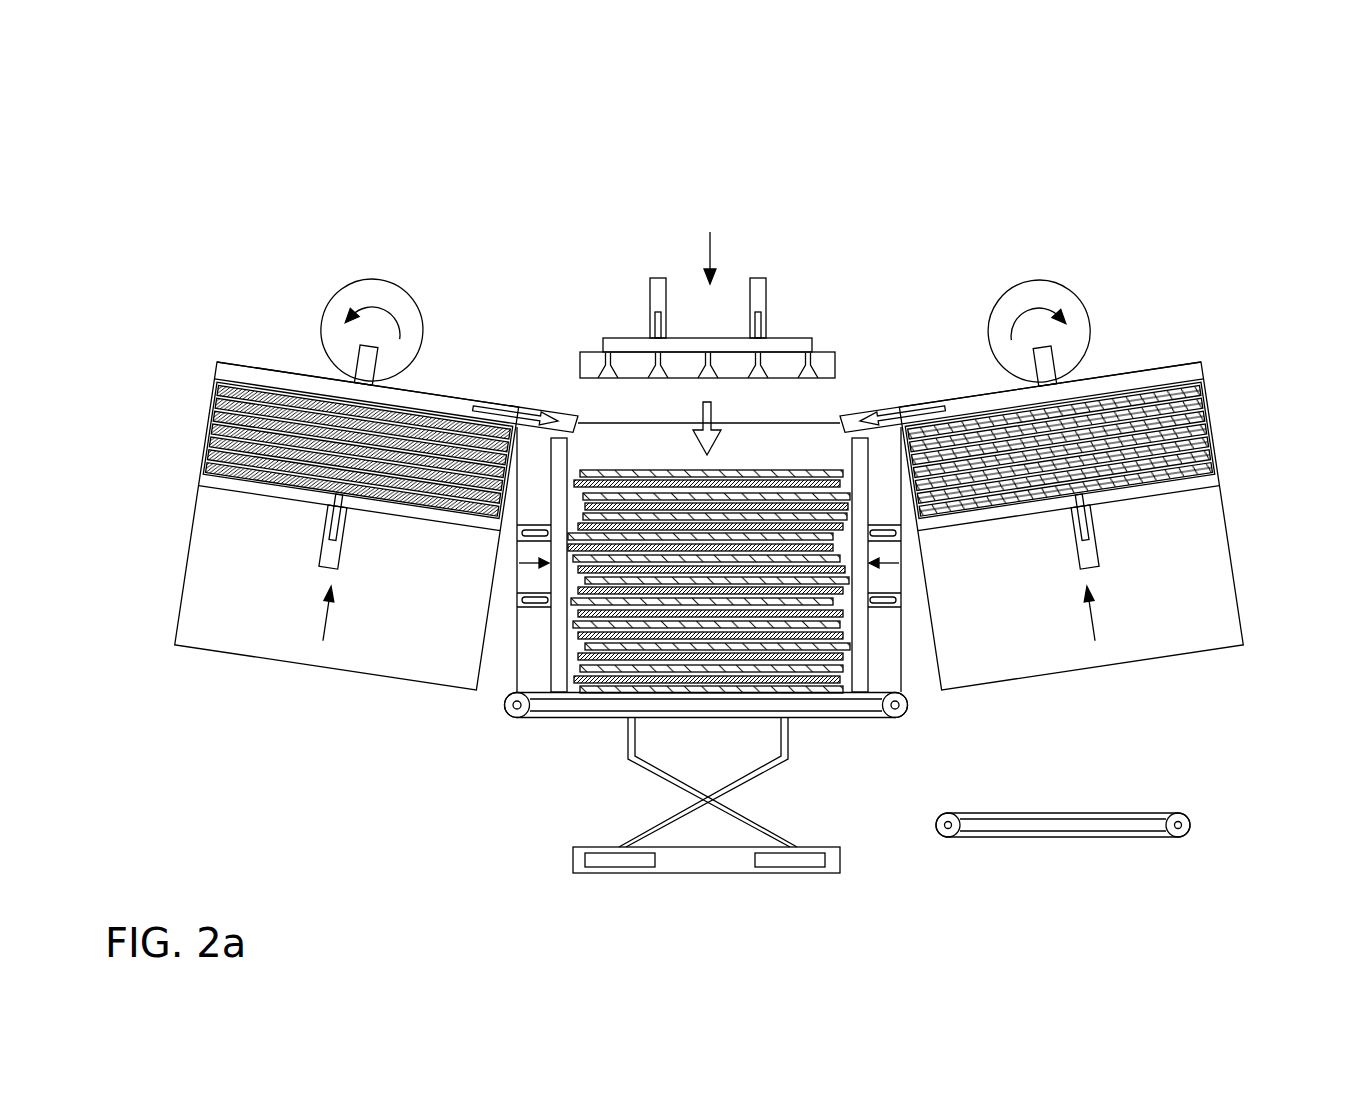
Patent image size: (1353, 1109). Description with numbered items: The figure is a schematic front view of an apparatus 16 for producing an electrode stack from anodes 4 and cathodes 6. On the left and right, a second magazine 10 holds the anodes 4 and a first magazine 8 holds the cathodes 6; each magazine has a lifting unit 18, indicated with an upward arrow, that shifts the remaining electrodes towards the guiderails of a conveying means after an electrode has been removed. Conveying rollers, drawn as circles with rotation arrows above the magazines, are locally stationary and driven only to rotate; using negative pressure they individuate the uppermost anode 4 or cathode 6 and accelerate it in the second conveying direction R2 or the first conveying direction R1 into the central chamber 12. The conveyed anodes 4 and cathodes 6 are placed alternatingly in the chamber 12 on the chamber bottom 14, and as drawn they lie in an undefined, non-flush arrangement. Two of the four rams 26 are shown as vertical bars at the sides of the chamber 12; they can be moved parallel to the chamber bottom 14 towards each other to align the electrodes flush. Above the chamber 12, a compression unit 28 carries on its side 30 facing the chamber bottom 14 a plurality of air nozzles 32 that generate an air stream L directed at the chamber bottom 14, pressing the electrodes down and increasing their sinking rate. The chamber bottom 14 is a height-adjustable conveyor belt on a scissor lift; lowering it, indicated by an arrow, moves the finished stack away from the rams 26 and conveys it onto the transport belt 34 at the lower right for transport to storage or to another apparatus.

The anode 4 is at (222, 440).
The cathode 6 is at (1195, 417).
The first magazine 8 is at (1236, 618).
The second magazine 10 is at (310, 667).
The chamber 12 is at (528, 660).
The chamber bottom 14 is at (557, 716).
The apparatus 16 is at (954, 180).
The lifting unit 18 is at (330, 552).
The ram 26 is at (560, 460).
The compression unit 28 is at (628, 345).
The side 30 is at (680, 377).
The air nozzle 32 is at (606, 370).
The transport belt 34 is at (1197, 823).
The air stream L is at (707, 423).
The first conveying direction R1 is at (890, 414).
The second conveying direction R2 is at (505, 413).